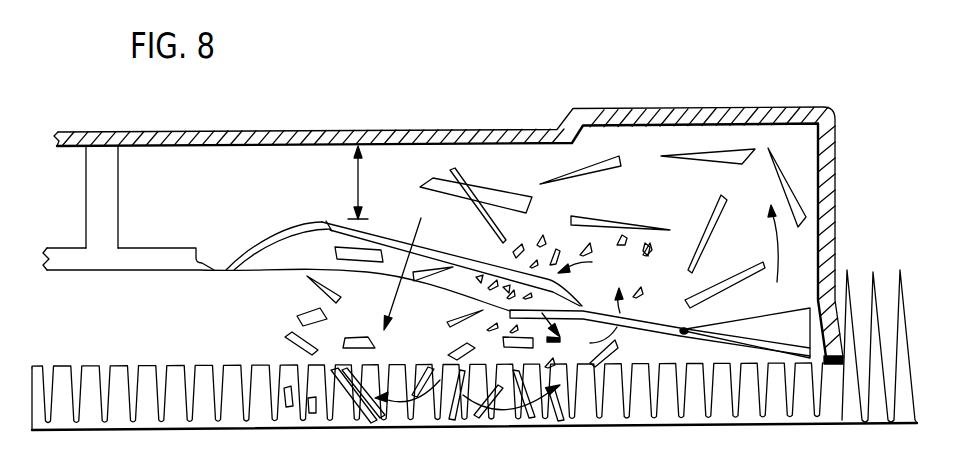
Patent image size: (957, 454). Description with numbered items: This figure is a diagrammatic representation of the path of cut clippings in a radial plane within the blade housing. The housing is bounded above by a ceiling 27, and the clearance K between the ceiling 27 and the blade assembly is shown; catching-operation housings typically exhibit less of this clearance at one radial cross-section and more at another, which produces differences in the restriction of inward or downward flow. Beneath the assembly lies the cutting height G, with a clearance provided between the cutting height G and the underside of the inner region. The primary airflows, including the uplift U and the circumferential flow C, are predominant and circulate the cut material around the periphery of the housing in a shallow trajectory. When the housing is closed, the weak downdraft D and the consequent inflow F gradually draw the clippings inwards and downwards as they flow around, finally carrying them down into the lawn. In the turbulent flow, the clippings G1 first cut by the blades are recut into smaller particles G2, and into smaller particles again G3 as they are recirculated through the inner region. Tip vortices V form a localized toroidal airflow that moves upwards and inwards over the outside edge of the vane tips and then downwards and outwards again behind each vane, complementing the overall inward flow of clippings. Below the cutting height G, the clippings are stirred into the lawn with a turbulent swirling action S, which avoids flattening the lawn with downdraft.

The ceiling 27 is at (418, 140).
The clearance K is at (345, 182).
The inflow F is at (520, 193).
The downdraft D is at (369, 278).
The cutting height G is at (206, 366).
The clippings first cut by the blades G1 is at (663, 189).
The smaller particles G2 is at (451, 317).
The still smaller particles G3 is at (582, 274).
The circumferential airflow C is at (744, 210).
The uplift U is at (731, 256).
The tip vortices V is at (580, 340).
The swirl S is at (424, 388).